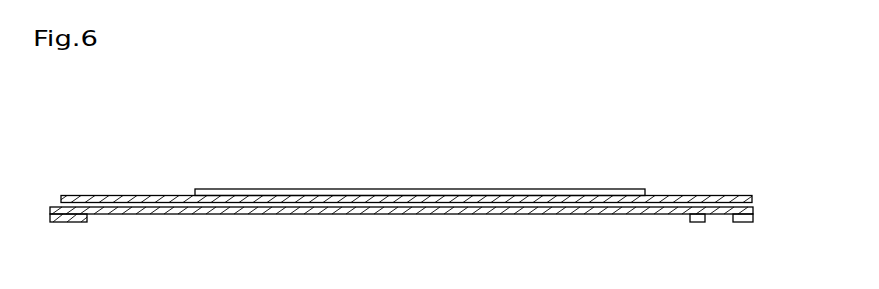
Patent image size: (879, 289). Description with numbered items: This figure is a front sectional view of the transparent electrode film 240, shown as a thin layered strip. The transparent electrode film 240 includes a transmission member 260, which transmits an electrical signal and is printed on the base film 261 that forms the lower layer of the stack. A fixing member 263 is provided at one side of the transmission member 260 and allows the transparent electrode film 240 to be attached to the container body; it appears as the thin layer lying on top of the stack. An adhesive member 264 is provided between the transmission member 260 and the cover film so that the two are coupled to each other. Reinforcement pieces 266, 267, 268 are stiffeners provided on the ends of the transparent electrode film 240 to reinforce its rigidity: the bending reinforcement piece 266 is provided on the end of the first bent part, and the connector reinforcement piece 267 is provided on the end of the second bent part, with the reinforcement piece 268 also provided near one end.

The transparent electrode film 240 is at (412, 155).
The transmission member 260 is at (755, 206).
The base film 261 is at (417, 215).
The fixing member 263 is at (270, 189).
The adhesive member 264 is at (61, 201).
The bending reinforcement piece 266 is at (742, 223).
The connector reinforcement piece 267 is at (72, 222).
The reinforcement piece 268 is at (694, 223).